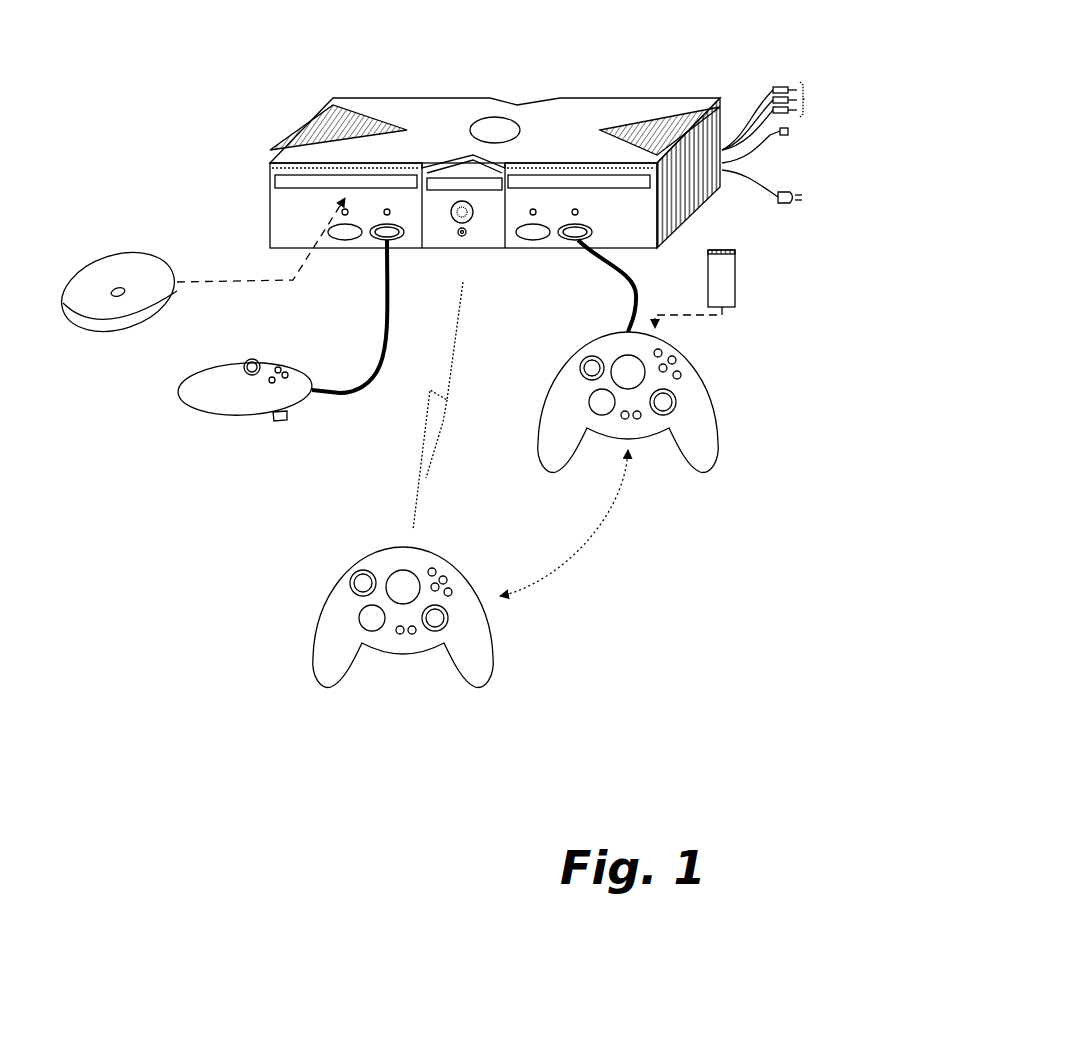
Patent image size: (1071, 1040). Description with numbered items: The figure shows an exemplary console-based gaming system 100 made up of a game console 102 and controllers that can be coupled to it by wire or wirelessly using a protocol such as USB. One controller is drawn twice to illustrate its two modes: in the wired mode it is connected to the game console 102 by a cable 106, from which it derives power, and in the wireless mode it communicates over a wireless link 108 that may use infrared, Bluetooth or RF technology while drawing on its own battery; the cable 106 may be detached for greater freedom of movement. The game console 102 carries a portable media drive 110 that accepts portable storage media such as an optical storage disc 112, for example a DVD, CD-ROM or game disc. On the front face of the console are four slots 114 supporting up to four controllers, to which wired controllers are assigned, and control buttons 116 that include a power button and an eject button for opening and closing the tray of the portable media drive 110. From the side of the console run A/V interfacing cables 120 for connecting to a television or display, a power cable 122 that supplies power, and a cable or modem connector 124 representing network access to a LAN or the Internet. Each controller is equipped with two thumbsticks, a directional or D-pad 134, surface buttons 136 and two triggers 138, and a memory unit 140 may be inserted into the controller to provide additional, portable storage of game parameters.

The console-based gaming system 100 is at (624, 28).
The game console 102 is at (370, 98).
The cable 106 is at (385, 317).
The wireless link 108 is at (422, 447).
The portable media drive 110 is at (272, 170).
The optical storage disc 112 is at (130, 325).
The slots 114 is at (383, 243).
The control buttons 116 is at (462, 199).
The A/V interfacing cables 120 is at (775, 87).
The power cable 122 is at (780, 207).
The cable or modem connector 124 is at (760, 153).
The directional or D-pad 134 is at (560, 401).
The surface buttons 136 is at (703, 362).
The triggers 138 is at (280, 418).
The memory unit 140 is at (735, 275).